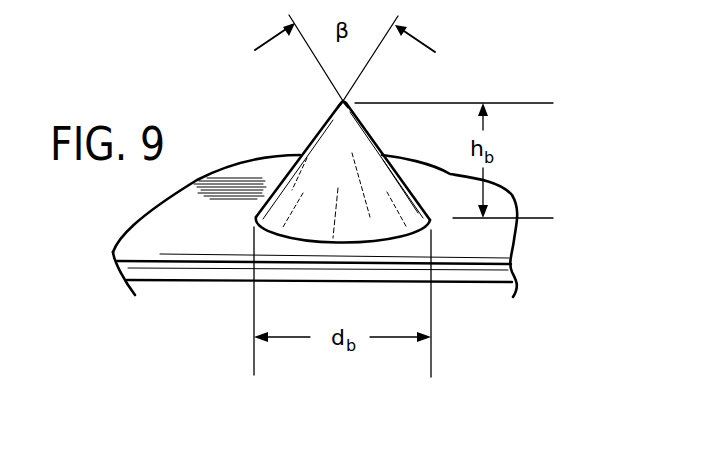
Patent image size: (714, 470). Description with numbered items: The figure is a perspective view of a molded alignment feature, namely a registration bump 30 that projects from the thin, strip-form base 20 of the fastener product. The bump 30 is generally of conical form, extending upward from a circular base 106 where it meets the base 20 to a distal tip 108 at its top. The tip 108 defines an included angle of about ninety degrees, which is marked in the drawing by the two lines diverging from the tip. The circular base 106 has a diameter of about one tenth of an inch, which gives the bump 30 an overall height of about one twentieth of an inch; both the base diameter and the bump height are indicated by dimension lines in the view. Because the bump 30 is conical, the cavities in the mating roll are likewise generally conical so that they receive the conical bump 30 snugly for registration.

The base 20 is at (207, 280).
The registration bump 30 is at (291, 119).
The circular base 106 is at (255, 219).
The distal tip 108 is at (348, 99).